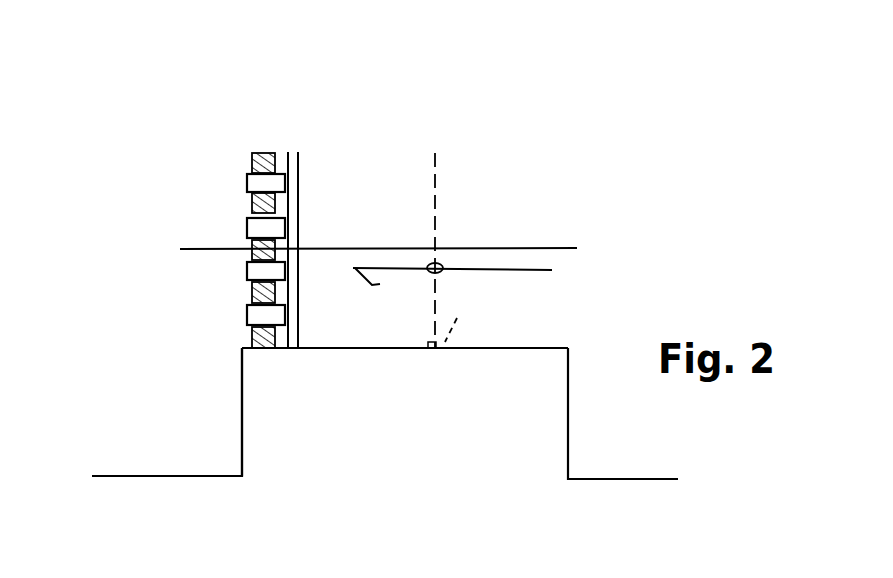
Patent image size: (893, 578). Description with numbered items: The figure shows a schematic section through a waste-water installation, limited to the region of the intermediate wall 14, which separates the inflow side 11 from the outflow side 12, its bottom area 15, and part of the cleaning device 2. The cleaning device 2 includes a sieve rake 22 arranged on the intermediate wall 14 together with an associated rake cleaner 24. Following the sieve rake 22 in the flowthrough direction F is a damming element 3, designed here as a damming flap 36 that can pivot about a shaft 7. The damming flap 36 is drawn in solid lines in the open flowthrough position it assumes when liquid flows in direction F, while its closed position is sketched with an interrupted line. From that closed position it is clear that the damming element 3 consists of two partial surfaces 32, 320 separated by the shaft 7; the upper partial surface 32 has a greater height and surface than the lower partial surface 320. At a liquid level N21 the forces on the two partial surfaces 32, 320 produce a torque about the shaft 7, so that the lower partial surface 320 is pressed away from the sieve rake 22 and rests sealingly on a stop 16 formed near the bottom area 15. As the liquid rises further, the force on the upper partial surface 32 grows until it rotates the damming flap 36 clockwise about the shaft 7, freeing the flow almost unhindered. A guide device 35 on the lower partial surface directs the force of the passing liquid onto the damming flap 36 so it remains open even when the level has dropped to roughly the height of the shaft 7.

The cleaning device 2 is at (226, 132).
The sieve rake 22 is at (255, 207).
The rake cleaner 24 is at (285, 180).
The flowthrough direction F is at (176, 223).
The level N21 is at (396, 225).
The partial surface 32 is at (432, 192).
The damming flap 36 is at (458, 172).
The shaft 7 is at (441, 264).
The bottom area 15 is at (405, 302).
The guide device 35 is at (372, 285).
The damming element 3 is at (383, 268).
The partial surface 320 is at (436, 307).
The stop 16 is at (433, 350).
The inflow side 11 is at (135, 433).
The intermediate wall 14 is at (262, 448).
The outflow side 12 is at (635, 440).